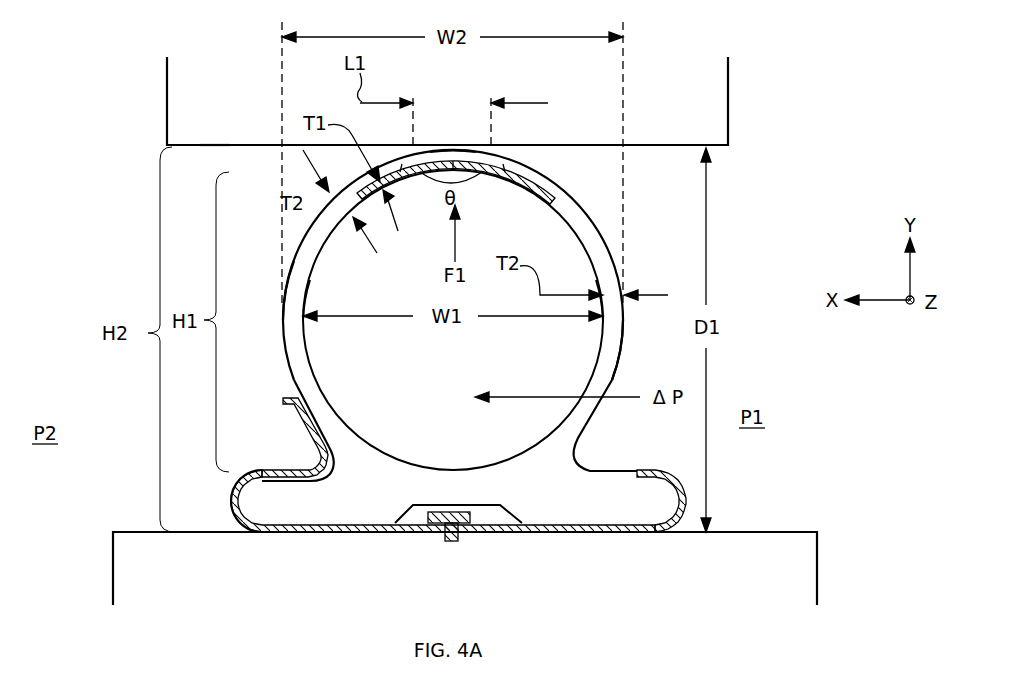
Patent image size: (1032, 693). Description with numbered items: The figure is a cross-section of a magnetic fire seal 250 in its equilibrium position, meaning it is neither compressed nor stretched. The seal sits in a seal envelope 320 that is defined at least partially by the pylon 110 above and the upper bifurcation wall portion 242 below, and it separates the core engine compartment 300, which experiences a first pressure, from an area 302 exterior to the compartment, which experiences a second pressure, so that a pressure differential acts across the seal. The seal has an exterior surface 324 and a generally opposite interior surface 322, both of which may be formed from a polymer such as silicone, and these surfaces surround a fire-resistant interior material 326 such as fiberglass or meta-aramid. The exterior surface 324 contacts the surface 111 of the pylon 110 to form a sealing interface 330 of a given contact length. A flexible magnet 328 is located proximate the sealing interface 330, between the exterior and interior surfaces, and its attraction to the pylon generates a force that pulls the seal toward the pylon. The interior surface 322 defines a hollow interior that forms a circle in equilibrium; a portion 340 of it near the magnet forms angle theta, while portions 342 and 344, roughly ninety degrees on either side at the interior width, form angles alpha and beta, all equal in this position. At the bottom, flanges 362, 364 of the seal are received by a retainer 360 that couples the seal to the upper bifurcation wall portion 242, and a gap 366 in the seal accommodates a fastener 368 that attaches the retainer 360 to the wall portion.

The pylon 110 is at (686, 107).
The surface of pylon 111 is at (213, 147).
The upper bifurcation wall portion 242 is at (441, 592).
The magnetic fire seal 250 is at (581, 198).
The core engine compartment 300 is at (746, 279).
The area exterior to core engine compartment 302 is at (36, 244).
The seal envelope 320 is at (262, 183).
The interior surface 322 is at (320, 255).
The exterior surface 324 is at (285, 362).
The interior material 326 is at (356, 494).
The magnet 328 is at (505, 173).
The sealing interface 330 is at (447, 145).
The portion of the interior surface proximate magnet 340 is at (446, 172).
The portion of the interior surface at interior width W1 342 is at (305, 323).
The portion of the interior surface at interior width W1 344 is at (598, 323).
The retainer 360 is at (284, 470).
The flange 362 is at (275, 510).
The flange 364 is at (632, 507).
The gap 366 is at (486, 515).
The fastener 368 is at (448, 515).